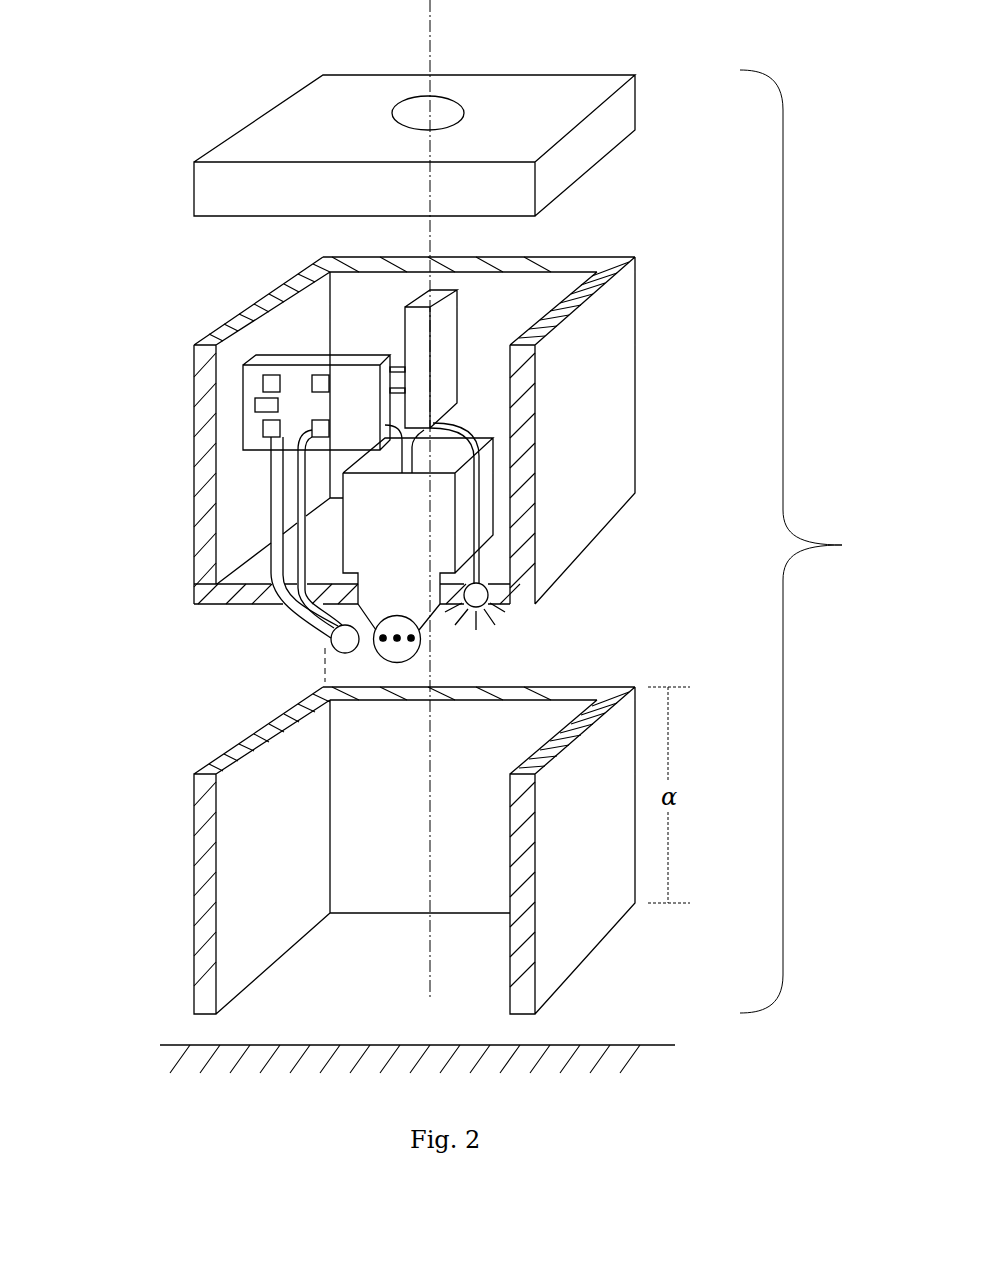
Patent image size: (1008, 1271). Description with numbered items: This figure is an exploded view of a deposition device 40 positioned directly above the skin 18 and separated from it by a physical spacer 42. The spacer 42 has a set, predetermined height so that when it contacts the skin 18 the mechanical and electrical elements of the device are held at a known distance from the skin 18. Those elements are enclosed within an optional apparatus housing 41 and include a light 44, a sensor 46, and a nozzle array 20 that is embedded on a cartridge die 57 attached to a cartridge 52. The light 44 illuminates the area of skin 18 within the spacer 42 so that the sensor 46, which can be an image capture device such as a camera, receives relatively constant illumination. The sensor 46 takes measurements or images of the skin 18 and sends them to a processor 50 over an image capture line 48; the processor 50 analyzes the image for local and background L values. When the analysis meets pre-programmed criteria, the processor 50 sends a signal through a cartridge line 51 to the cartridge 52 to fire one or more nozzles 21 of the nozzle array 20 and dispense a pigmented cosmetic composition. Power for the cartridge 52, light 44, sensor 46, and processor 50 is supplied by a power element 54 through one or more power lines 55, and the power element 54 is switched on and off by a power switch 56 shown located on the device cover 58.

The skin 18 is at (618, 1045).
The nozzle array 20 is at (402, 648).
The nozzles 21 is at (422, 638).
The deposition device 40 is at (811, 541).
The apparatus housing 41 is at (636, 330).
The physical spacer 42 is at (195, 920).
The light 44 is at (490, 603).
The sensor 46 is at (333, 651).
The image capture line 48 is at (323, 626).
The processor 50 is at (243, 433).
The cartridge line 51 is at (400, 457).
The cartridge 52 is at (437, 540).
The power element 54 is at (422, 372).
The power lines 55 is at (478, 485).
The power switch 56 is at (450, 108).
The cartridge die 57 is at (427, 624).
The device cover 58 is at (596, 129).